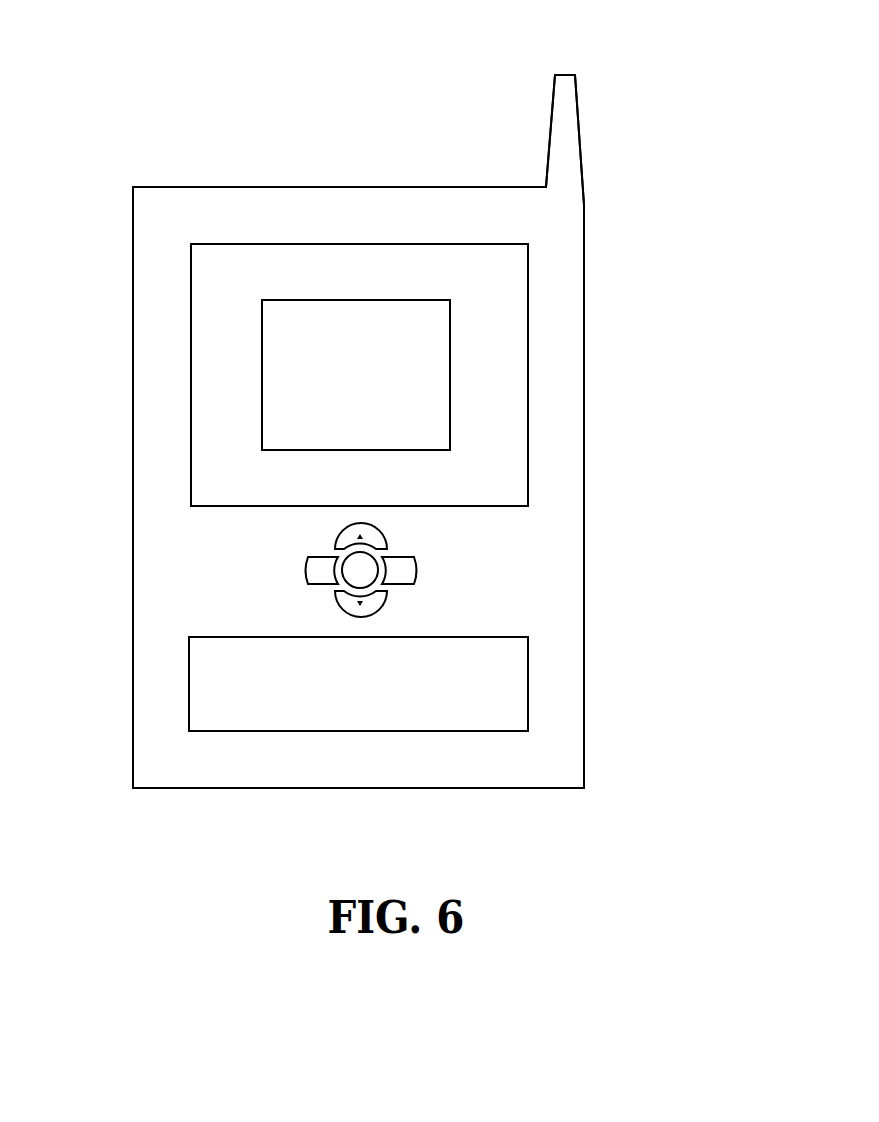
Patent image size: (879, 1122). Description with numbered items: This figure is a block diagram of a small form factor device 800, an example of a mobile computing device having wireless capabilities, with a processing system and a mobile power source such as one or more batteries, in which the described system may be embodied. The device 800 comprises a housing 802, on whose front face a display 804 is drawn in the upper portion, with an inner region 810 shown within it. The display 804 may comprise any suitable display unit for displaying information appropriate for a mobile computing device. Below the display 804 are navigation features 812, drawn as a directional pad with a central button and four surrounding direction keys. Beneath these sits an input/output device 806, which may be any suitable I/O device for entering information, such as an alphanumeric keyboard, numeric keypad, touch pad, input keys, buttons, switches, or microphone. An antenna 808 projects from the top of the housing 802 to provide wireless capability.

The small form factor device 800 is at (140, 80).
The housing 802 is at (584, 488).
The display 804 is at (528, 262).
The input/output (I/O) device 806 is at (528, 675).
The antenna 808 is at (551, 122).
The display window 810 is at (450, 393).
The navigation features 812 is at (448, 562).